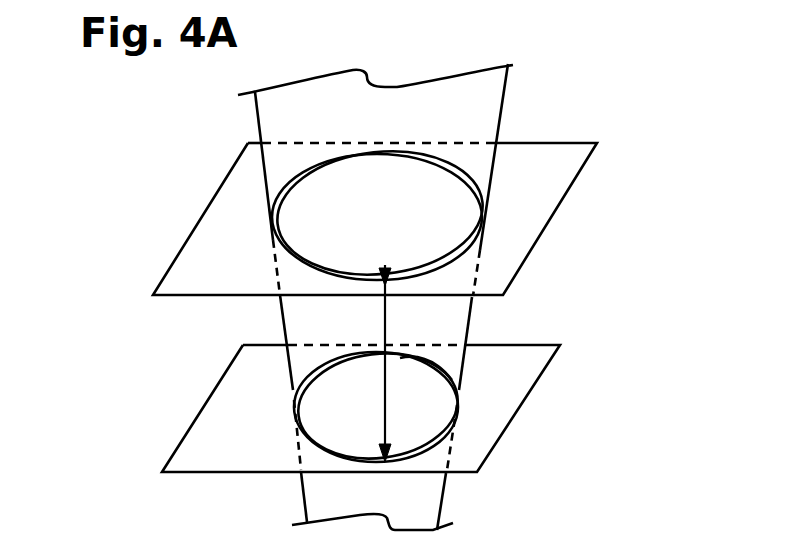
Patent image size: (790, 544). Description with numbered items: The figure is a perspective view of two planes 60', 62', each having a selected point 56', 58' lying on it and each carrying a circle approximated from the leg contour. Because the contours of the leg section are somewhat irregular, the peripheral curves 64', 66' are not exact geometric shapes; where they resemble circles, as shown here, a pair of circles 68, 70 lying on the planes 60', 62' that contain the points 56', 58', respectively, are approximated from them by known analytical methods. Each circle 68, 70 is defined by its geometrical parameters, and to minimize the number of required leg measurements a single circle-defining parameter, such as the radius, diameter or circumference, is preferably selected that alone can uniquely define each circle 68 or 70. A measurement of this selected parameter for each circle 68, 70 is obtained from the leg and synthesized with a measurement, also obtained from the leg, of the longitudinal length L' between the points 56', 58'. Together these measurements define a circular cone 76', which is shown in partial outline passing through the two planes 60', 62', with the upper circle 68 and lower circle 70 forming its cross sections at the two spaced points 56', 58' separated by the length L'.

The circular cone 76' is at (350, 297).
The plane 60' is at (391, 219).
The plane 62' is at (378, 408).
The peripheral curve 64' is at (418, 189).
The peripheral curve 66' is at (414, 387).
The circle 68 is at (325, 168).
The circle 70 is at (323, 366).
The point 56' is at (364, 254).
The point 58' is at (366, 437).
The longitudinal length L' is at (408, 365).